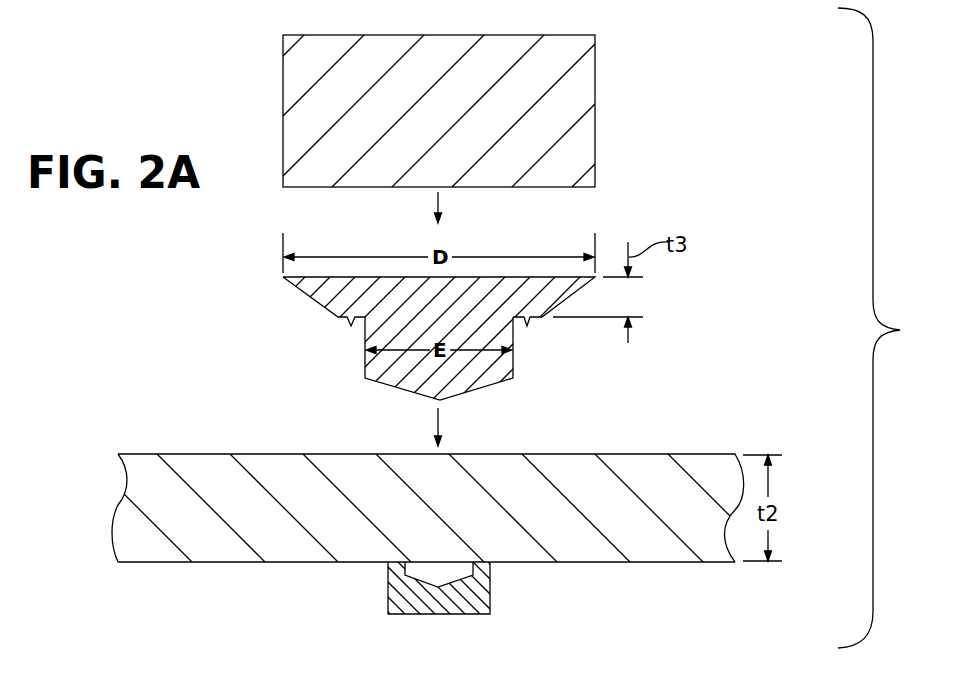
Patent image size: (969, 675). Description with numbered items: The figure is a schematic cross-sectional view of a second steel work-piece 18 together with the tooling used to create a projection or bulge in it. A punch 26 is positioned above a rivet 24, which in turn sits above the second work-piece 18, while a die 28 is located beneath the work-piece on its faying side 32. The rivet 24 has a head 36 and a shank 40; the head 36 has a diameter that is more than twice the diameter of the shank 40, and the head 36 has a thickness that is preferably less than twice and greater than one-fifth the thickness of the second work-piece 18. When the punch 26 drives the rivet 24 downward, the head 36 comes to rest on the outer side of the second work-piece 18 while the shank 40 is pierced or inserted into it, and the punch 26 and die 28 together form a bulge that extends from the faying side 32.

The punch 26 is at (597, 82).
The rivet 24 is at (442, 294).
The head 36 is at (318, 296).
The shank 40 is at (500, 368).
The second steel work-piece 18 is at (466, 508).
The faying side 32 is at (655, 563).
The die 28 is at (490, 580).